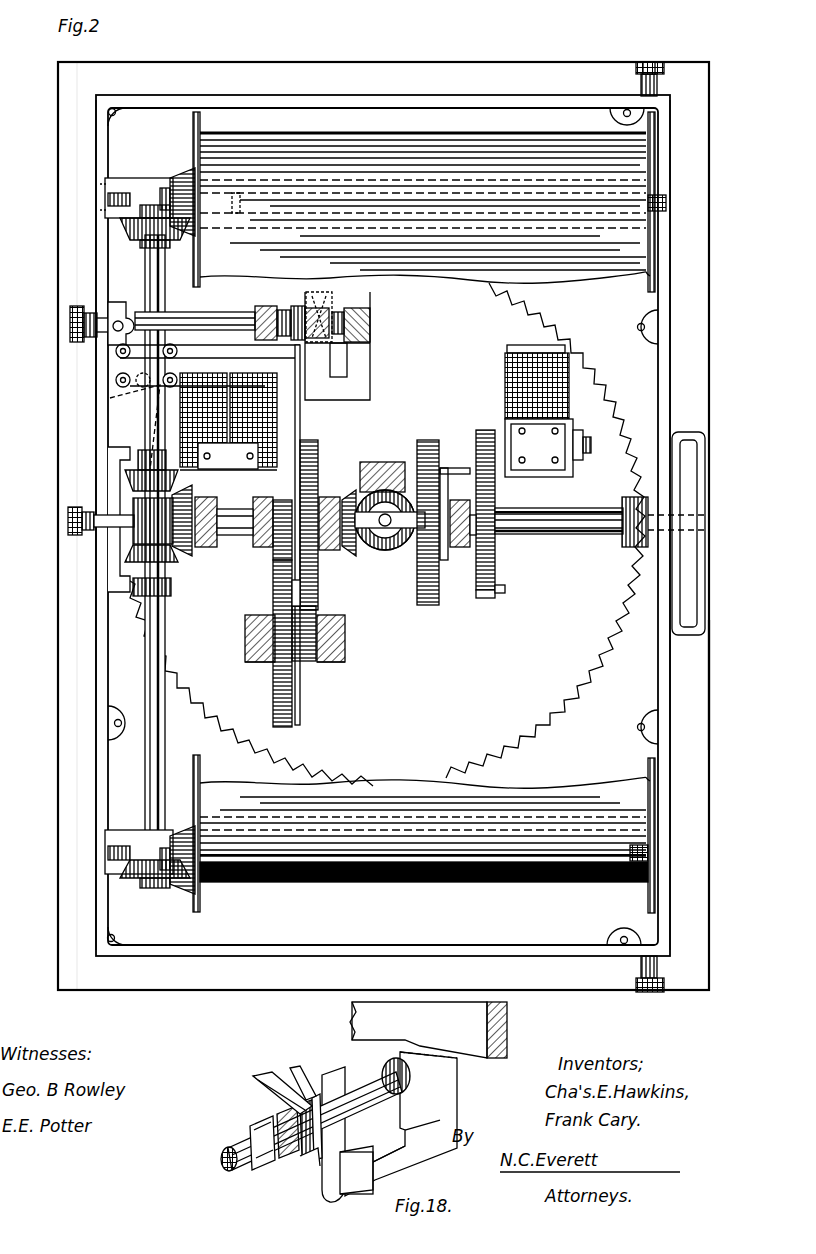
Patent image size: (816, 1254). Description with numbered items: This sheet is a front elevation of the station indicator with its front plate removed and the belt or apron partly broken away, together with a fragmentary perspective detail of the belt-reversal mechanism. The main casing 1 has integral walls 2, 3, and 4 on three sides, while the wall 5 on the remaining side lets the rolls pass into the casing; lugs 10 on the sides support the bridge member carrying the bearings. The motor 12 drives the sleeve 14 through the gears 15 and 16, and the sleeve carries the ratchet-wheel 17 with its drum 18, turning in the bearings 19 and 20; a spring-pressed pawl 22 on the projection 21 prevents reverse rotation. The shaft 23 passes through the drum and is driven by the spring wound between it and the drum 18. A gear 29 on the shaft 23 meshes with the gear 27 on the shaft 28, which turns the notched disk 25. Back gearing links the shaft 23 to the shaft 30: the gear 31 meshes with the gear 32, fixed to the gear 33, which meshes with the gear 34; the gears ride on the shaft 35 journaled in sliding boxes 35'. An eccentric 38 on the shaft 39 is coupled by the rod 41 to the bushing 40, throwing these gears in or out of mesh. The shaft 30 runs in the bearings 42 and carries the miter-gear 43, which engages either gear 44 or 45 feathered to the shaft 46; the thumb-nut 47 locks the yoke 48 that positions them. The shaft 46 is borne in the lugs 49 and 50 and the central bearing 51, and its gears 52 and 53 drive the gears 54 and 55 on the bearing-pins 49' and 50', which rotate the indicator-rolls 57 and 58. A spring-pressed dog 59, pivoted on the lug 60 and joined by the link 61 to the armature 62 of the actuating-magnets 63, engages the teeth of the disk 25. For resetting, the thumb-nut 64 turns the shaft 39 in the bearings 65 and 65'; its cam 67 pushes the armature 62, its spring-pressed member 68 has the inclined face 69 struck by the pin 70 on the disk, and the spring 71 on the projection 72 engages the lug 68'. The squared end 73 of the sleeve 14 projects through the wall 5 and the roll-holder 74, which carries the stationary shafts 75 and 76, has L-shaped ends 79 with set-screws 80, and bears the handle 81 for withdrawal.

In FIG. 2, the main casing 1 is at (344, 63).
In FIG. 2, the casing wall 2 is at (378, 96).
In FIG. 2, the casing wall 3 is at (134, 80).
In FIG. 2, the casing wall 4 is at (598, 82).
In FIG. 2, the casing wall 5 is at (656, 378).
In FIG. 2, the lugs 10 is at (645, 318).
In FIG. 2, the motor 12 is at (512, 352).
In FIG. 2, the sleeve 14 is at (530, 536).
In FIG. 2, the gear 15 is at (485, 430).
In FIG. 2, the gear 16 is at (496, 590).
In FIG. 2, the ratchet-wheel 17 is at (472, 548).
In FIG. 2, the drum 18 is at (480, 596).
In FIG. 2, the bearing 19 is at (328, 498).
In FIG. 2, the bearing 20 is at (630, 496).
In FIG. 2, the projection 21 is at (444, 466).
In FIG. 2, the spring-pressed pawl 22 is at (418, 470).
In FIG. 2, the shaft 23 is at (388, 552).
In FIG. 2, the notched disk 25 is at (385, 534).
In FIG. 2, the gear 27 is at (368, 548).
In FIG. 2, the shaft 28 is at (376, 561).
In FIG. 2, the gear 29 is at (350, 492).
In FIG. 2, the shaft 30 is at (240, 536).
In FIG. 2, the gear 31 is at (318, 446).
In FIG. 2, the gear 32 is at (316, 664).
In FIG. 2, the gear 33 is at (292, 724).
In FIG. 2, the gear 34 is at (282, 500).
In FIG. 2, the shaft 35 is at (308, 638).
In FIG. 2, the boxes 35' is at (302, 679).
In FIG. 2, the eccentric 38 is at (297, 306).
In FIG. 18, the eccentric 38 is at (304, 1156).
In FIG. 2, the shaft 39 is at (215, 322).
In FIG. 18, the shaft 39 is at (228, 1162).
In FIG. 2, the bushing 40 is at (298, 662).
In FIG. 2, the rod 41 is at (298, 420).
In FIG. 18, the rod 41 is at (316, 1160).
In FIG. 2, the bearings 42 is at (218, 500).
In FIG. 2, the miter-gear 43 is at (185, 553).
In FIG. 2, the gear 44 is at (128, 552).
In FIG. 2, the gear 45 is at (128, 480).
In FIG. 2, the shaft 46 is at (150, 652).
In FIG. 2, the thumb-nut 47 is at (70, 518).
In FIG. 2, the yoke 48 is at (125, 574).
In FIG. 2, the lug 49 is at (136, 180).
In FIG. 2, the bearing-pin 49' is at (423, 880).
In FIG. 2, the lug 50 is at (139, 834).
In FIG. 2, the bearing-pin 50' is at (253, 162).
In FIG. 2, the bearing 51 is at (134, 525).
In FIG. 2, the gear 52 is at (128, 876).
In FIG. 2, the gear 53 is at (128, 240).
In FIG. 2, the gear 54 is at (200, 862).
In FIG. 2, the gear 55 is at (182, 176).
In FIG. 2, the indicator-roll 57 is at (445, 884).
In FIG. 2, the indicator-roll 58 is at (504, 134).
In FIG. 2, the spring-pressed dog 59 is at (126, 330).
In FIG. 2, the lug 60 is at (118, 352).
In FIG. 2, the link 61 is at (120, 386).
In FIG. 2, the armature 62 is at (258, 318).
In FIG. 2, the actuating-magnets 63 is at (228, 421).
In FIG. 2, the thumb-nut 64 is at (72, 318).
In FIG. 2, the bearing 65 is at (292, 299).
In FIG. 18, the bearing 65 is at (248, 1133).
In FIG. 2, the bearing 65' is at (377, 319).
In FIG. 18, the bearing 65' is at (448, 1030).
In FIG. 2, the cam 67 is at (275, 312).
In FIG. 18, the cam 67 is at (276, 1130).
In FIG. 2, the spring-pressed member 68 is at (338, 323).
In FIG. 18, the spring-pressed member 68 is at (284, 1064).
In FIG. 18, the lug 68' is at (302, 1174).
In FIG. 2, the angularly-inclined face 69 is at (332, 300).
In FIG. 18, the angularly-inclined face 69 is at (256, 1080).
In FIG. 2, the pin 70 is at (180, 398).
In FIG. 2, the spring 71 is at (320, 362).
In FIG. 18, the spring 71 is at (346, 1135).
In FIG. 2, the projection 72 is at (362, 380).
In FIG. 18, the projection 72 is at (446, 1118).
In FIG. 2, the squared end 73 is at (706, 520).
In FIG. 2, the roll-holder 74 is at (700, 688).
In FIG. 2, the stationary shaft 75 is at (546, 882).
In FIG. 2, the stationary shaft 76 is at (660, 200).
In FIG. 2, the L-shaped ends 79 is at (660, 90).
In FIG. 2, the set-screws 80 is at (650, 62).
In FIG. 2, the handle 81 is at (706, 580).